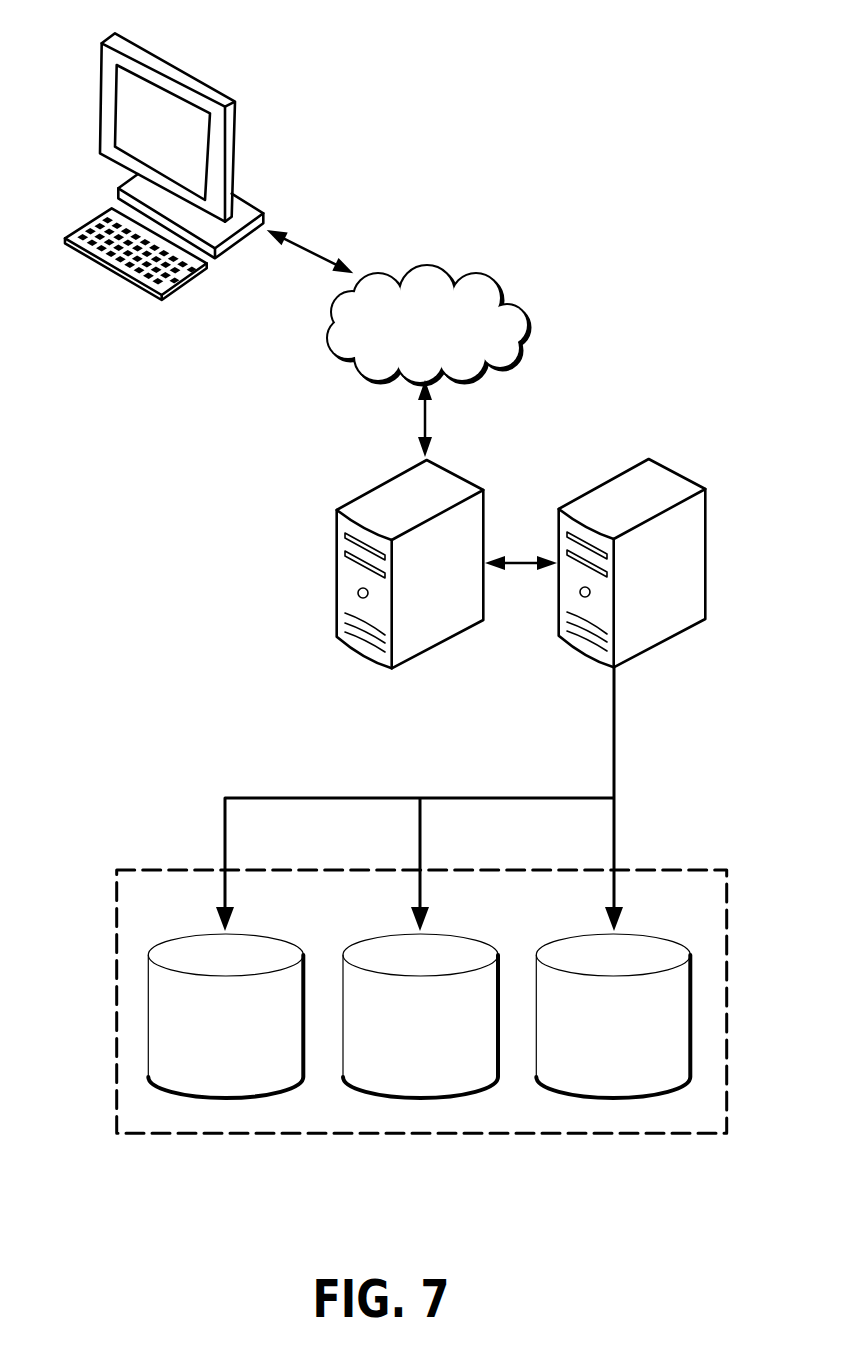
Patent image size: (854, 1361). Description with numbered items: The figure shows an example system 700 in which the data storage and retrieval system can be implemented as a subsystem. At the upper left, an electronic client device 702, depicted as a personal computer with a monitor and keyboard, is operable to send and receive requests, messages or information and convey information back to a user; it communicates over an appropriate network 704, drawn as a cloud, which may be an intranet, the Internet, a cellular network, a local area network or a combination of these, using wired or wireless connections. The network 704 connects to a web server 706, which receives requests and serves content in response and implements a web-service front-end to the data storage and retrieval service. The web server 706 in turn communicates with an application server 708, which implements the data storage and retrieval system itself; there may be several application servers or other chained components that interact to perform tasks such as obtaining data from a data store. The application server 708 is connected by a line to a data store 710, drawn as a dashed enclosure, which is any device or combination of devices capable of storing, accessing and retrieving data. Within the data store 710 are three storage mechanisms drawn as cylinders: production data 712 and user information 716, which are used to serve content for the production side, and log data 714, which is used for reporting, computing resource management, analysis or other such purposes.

The example system 700 is at (669, 306).
The electronic client device 702 is at (185, 70).
The network 704 is at (463, 271).
The web server 706 is at (337, 562).
The application server 708 is at (584, 656).
The data store 710 is at (153, 1137).
The production data 712 is at (225, 1099).
The log data 714 is at (420, 1099).
The user information 716 is at (613, 1099).